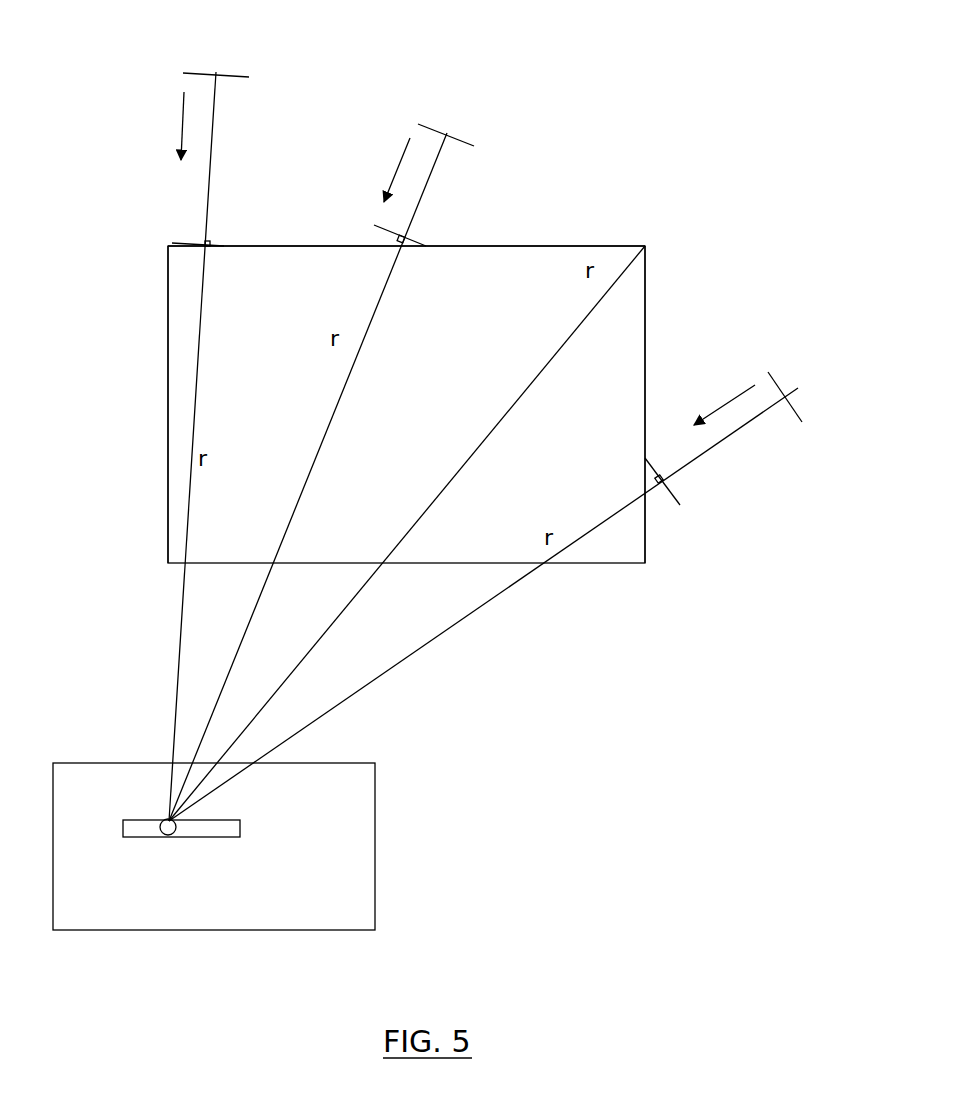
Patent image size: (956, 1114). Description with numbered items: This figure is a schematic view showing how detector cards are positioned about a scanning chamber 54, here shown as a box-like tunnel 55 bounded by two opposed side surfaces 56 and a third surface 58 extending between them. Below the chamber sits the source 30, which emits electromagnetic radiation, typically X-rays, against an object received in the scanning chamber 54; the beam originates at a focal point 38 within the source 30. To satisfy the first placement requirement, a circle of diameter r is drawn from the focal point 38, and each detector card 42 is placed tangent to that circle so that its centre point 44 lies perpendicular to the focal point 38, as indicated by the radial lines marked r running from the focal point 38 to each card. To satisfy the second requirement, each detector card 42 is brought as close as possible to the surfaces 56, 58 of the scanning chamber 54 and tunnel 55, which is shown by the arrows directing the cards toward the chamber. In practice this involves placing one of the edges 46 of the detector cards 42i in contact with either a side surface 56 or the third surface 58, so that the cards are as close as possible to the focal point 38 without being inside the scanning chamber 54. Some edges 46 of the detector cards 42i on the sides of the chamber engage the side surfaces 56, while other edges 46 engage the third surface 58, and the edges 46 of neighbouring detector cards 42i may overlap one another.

The source 30 is at (382, 815).
The focal point 38 is at (167, 838).
The detector card 42 is at (214, 72).
The detector card 42i is at (186, 243).
The centre point 44 is at (219, 73).
The edge 46 is at (226, 245).
The scanning chamber 54 is at (406, 404).
The tunnel 55 is at (442, 413).
The side surface 56 is at (168, 368).
The third surface 58 is at (550, 246).